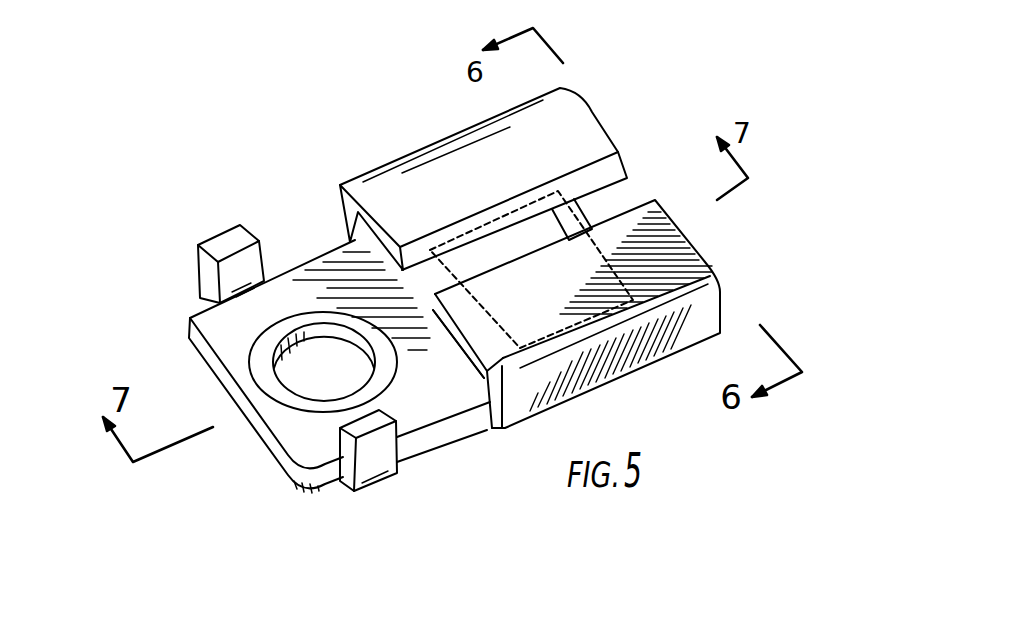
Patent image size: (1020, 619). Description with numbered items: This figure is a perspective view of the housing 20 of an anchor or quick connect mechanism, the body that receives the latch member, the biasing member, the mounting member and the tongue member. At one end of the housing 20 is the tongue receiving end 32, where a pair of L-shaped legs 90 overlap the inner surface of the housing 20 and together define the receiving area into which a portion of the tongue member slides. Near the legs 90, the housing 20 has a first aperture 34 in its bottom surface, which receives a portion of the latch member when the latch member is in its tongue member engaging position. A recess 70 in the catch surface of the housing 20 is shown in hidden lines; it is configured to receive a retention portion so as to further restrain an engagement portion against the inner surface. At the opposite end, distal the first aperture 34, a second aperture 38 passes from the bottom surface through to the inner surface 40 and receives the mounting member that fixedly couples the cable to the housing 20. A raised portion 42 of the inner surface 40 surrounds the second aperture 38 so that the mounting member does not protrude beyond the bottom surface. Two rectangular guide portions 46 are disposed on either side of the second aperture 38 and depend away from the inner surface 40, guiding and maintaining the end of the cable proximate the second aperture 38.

The housing 20 is at (127, 249).
The tongue receiving end 32 is at (606, 60).
The first aperture 34 is at (436, 296).
The second aperture 38 is at (311, 379).
The inner surface 40 is at (212, 338).
The raised portion 42 is at (293, 402).
The guide portion 46 is at (222, 247).
The recess 70 is at (620, 293).
The L-shaped legs 90 is at (603, 135).